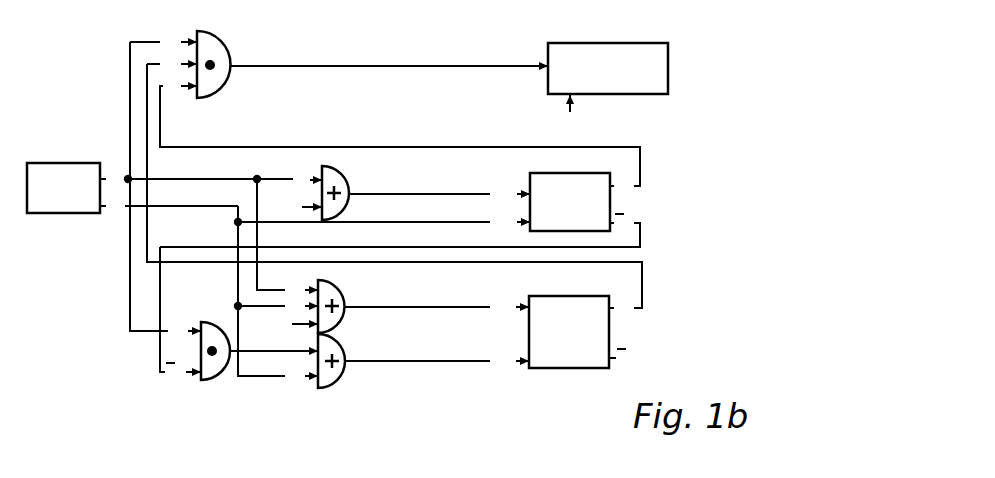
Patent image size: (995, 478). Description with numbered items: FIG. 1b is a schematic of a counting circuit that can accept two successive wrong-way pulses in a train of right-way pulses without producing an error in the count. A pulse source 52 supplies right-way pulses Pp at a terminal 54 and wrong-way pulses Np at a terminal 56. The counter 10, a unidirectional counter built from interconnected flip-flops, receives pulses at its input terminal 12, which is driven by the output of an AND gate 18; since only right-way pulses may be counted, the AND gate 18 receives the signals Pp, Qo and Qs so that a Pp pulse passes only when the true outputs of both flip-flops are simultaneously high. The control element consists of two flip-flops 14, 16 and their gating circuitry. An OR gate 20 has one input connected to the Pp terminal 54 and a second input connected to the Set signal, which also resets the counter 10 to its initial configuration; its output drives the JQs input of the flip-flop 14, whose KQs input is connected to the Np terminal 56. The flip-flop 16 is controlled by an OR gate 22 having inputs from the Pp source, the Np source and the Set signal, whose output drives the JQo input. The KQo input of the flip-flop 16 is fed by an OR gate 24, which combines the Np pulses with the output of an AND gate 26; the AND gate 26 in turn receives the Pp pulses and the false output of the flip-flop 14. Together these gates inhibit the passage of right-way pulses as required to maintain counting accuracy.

The counter 10 is at (664, 63).
The input terminal 12 is at (510, 65).
The flip-flop 14 is at (587, 182).
The flip-flop 16 is at (574, 302).
The AND gate 18 is at (222, 52).
The OR gate 20 is at (338, 184).
The OR gate 22 is at (340, 304).
The OR gate 24 is at (340, 359).
The AND gate 26 is at (217, 375).
The pulse source 52 is at (36, 163).
The terminal 54 is at (104, 173).
The terminal 56 is at (104, 213).